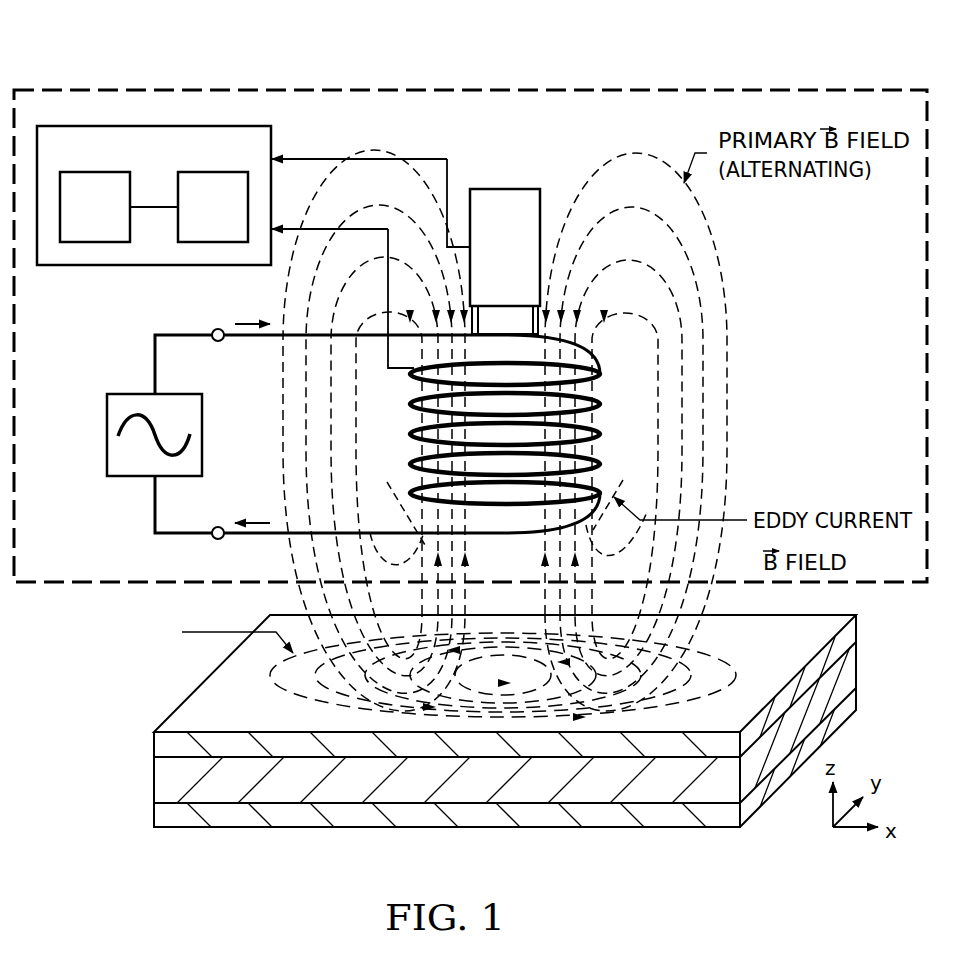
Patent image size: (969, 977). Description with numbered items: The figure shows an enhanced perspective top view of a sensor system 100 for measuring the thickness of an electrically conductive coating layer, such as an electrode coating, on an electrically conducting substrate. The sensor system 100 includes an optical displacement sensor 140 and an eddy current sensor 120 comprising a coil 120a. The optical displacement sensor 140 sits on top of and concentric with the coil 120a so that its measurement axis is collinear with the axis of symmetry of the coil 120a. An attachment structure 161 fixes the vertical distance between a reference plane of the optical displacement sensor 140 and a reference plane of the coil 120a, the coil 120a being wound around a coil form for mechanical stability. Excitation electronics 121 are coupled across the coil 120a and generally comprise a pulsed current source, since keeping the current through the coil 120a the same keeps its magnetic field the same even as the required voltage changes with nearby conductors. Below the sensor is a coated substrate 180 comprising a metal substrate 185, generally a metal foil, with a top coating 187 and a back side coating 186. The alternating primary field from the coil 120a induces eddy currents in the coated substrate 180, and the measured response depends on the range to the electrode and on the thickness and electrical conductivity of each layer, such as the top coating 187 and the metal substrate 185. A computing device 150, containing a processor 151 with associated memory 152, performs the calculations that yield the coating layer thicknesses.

The sensor system 100 is at (247, 88).
The computing device 150 is at (154, 229).
The processor 151 is at (236, 219).
The memory 152 is at (120, 219).
The excitation electronics 121 is at (107, 436).
The eddy current sensor 120 is at (652, 315).
The coil 120a is at (602, 360).
The optical displacement sensor 140 is at (508, 189).
The attachment structure 161 is at (478, 323).
The coated substrate 180 is at (441, 762).
The top coating 187 is at (163, 745).
The metal substrate 185 is at (163, 780).
The back side coating 186 is at (235, 818).